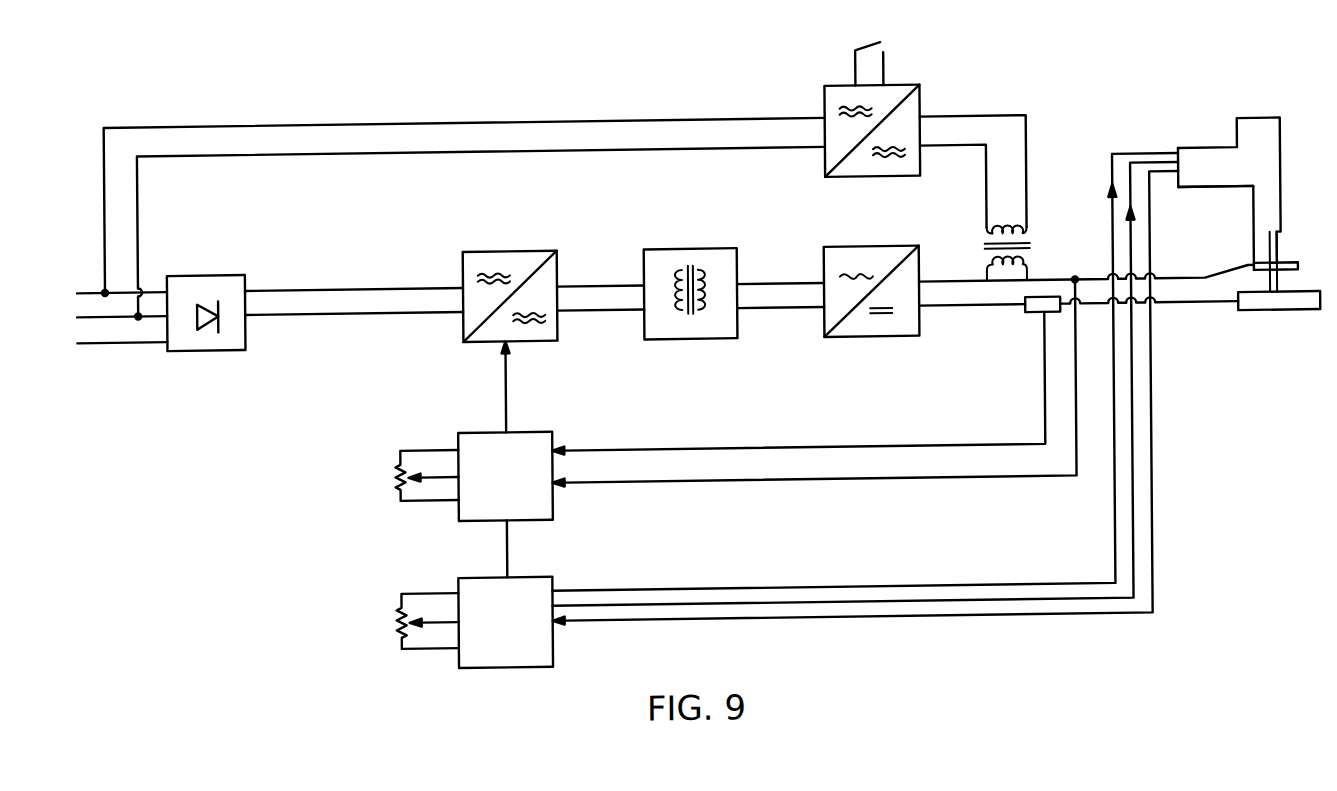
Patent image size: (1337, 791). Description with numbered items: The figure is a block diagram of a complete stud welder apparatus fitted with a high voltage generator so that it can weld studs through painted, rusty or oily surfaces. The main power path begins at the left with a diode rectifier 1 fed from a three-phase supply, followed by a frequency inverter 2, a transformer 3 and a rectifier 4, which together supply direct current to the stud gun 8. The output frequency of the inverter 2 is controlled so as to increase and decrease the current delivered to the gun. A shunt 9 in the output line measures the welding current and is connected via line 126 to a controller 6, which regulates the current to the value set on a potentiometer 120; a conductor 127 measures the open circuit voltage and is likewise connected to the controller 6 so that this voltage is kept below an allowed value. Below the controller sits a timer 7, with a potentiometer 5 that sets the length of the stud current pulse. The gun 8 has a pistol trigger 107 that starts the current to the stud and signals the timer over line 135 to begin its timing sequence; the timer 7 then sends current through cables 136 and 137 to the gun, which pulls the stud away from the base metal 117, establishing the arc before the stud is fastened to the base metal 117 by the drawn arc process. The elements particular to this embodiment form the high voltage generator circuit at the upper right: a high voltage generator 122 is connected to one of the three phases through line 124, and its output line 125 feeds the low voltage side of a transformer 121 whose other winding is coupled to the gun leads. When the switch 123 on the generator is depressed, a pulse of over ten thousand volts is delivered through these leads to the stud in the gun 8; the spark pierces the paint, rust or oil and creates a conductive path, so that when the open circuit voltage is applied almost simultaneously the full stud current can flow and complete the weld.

The diode rectifier 1 is at (200, 277).
The frequency inverter 2 is at (507, 257).
The transformer 3 is at (690, 257).
The rectifier 4 is at (870, 257).
The potentiometer 5 is at (393, 612).
The controller 6 is at (551, 504).
The timer 7 is at (550, 645).
The stud gun 8 is at (1266, 134).
The shunt 9 is at (1033, 326).
The pistol trigger 107 is at (1213, 203).
The base metal 117 is at (1293, 327).
The potentiometer 120 is at (393, 466).
The transformer 121 is at (1030, 261).
The high voltage generator 122 is at (921, 108).
The switch 123 is at (885, 74).
The line 124 is at (690, 128).
The line 125 is at (1027, 181).
The line 126 is at (838, 457).
The conductor 127 is at (858, 489).
The line 135 is at (1150, 474).
The cable 136 is at (1131, 526).
The cable 137 is at (1113, 514).